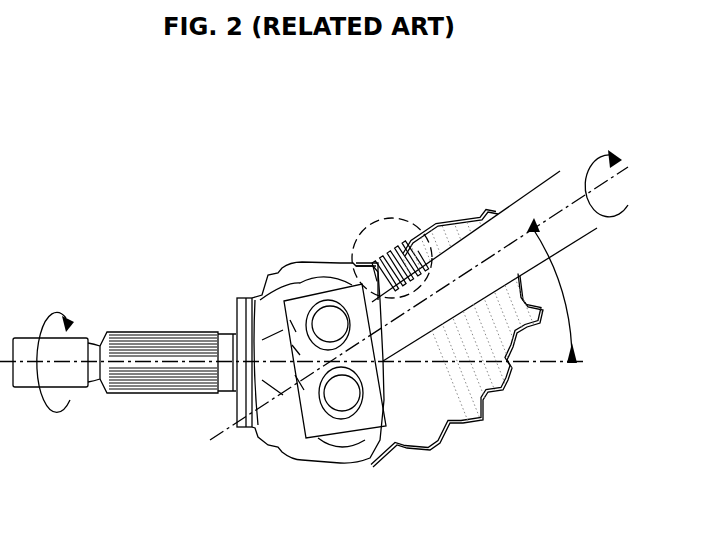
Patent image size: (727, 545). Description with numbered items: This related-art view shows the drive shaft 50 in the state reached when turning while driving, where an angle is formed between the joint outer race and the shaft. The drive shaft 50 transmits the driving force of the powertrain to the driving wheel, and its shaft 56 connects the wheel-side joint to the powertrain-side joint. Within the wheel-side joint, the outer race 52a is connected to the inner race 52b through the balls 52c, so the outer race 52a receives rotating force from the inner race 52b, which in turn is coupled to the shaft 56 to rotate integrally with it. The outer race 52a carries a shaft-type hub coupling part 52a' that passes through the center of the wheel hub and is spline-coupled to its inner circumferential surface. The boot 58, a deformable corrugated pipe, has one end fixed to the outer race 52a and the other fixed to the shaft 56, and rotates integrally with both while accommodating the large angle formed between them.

The drive shaft 50 is at (367, 200).
The outer race 52a is at (308, 326).
The hub coupling part 52a' is at (124, 319).
The inner race 52b is at (240, 297).
The balls 52c is at (335, 400).
The shaft 56 is at (530, 188).
The boot 58 is at (496, 427).